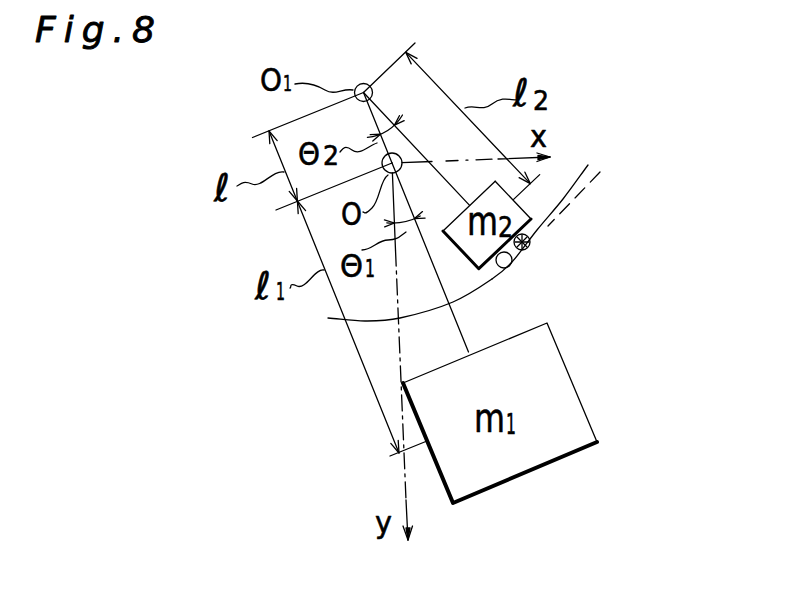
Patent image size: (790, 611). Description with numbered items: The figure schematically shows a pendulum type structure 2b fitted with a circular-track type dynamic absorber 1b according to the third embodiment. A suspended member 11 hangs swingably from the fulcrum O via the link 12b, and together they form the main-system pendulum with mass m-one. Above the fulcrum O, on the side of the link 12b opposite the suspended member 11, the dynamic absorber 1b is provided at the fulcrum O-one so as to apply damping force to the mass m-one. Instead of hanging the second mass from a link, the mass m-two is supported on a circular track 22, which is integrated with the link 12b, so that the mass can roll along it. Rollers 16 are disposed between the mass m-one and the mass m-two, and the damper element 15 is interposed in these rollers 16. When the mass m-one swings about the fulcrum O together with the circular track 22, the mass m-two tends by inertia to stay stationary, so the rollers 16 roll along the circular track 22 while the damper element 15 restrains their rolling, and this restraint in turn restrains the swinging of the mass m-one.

The circular-track type dynamic absorber 1b is at (568, 227).
The pendulum type structure 2b is at (554, 333).
The suspended member 11 is at (590, 446).
The link 12b is at (460, 322).
The damper element 15 is at (593, 193).
The rollers 16 is at (549, 204).
The circular track 22 is at (495, 282).